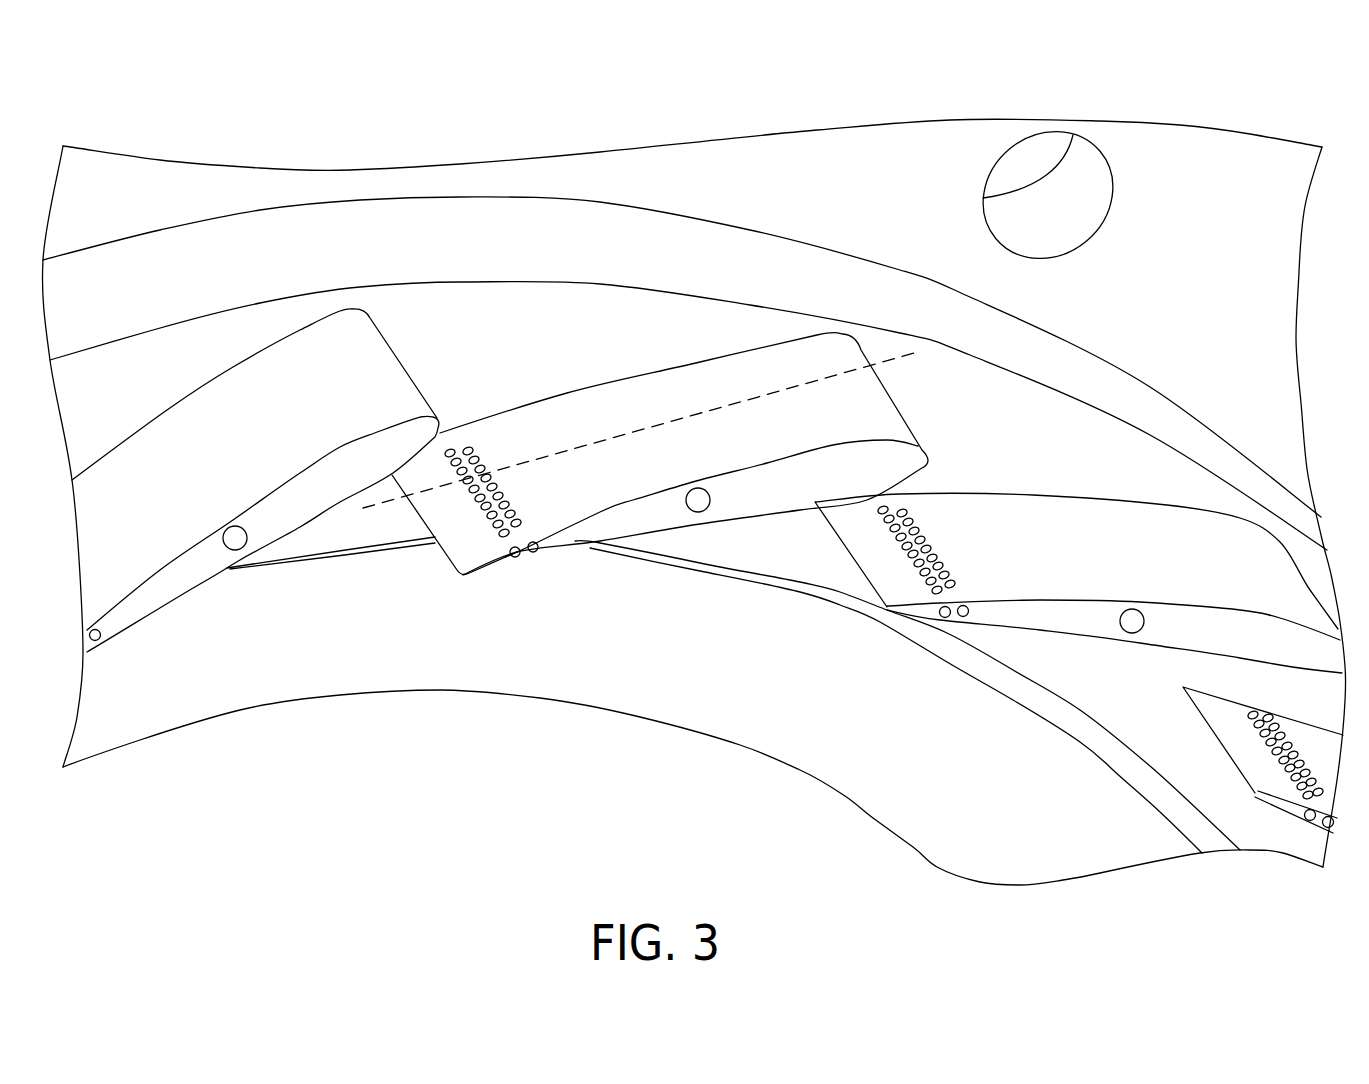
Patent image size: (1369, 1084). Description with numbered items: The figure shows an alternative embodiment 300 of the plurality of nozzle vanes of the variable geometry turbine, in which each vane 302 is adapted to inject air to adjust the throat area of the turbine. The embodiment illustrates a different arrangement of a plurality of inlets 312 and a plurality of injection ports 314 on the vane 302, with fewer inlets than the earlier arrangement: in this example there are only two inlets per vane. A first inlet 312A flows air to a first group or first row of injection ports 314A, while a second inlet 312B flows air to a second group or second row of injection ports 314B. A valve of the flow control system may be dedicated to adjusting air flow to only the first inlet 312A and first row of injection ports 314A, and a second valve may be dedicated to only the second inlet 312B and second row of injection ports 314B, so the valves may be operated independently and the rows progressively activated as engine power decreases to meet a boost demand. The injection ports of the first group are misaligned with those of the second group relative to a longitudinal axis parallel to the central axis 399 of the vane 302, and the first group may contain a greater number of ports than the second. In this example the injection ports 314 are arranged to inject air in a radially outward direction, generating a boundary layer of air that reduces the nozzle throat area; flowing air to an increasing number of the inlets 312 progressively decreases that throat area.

The alternative embodiment 300 is at (1286, 68).
The vane 302 is at (886, 376).
The central axis 399 is at (883, 373).
The plurality of inlets 312 is at (525, 580).
The first inlet 312A is at (512, 560).
The second inlet 312B is at (538, 553).
The plurality of injection ports 314 is at (450, 418).
The first row of injection ports 314A is at (475, 518).
The second row of injection ports 314B is at (512, 456).